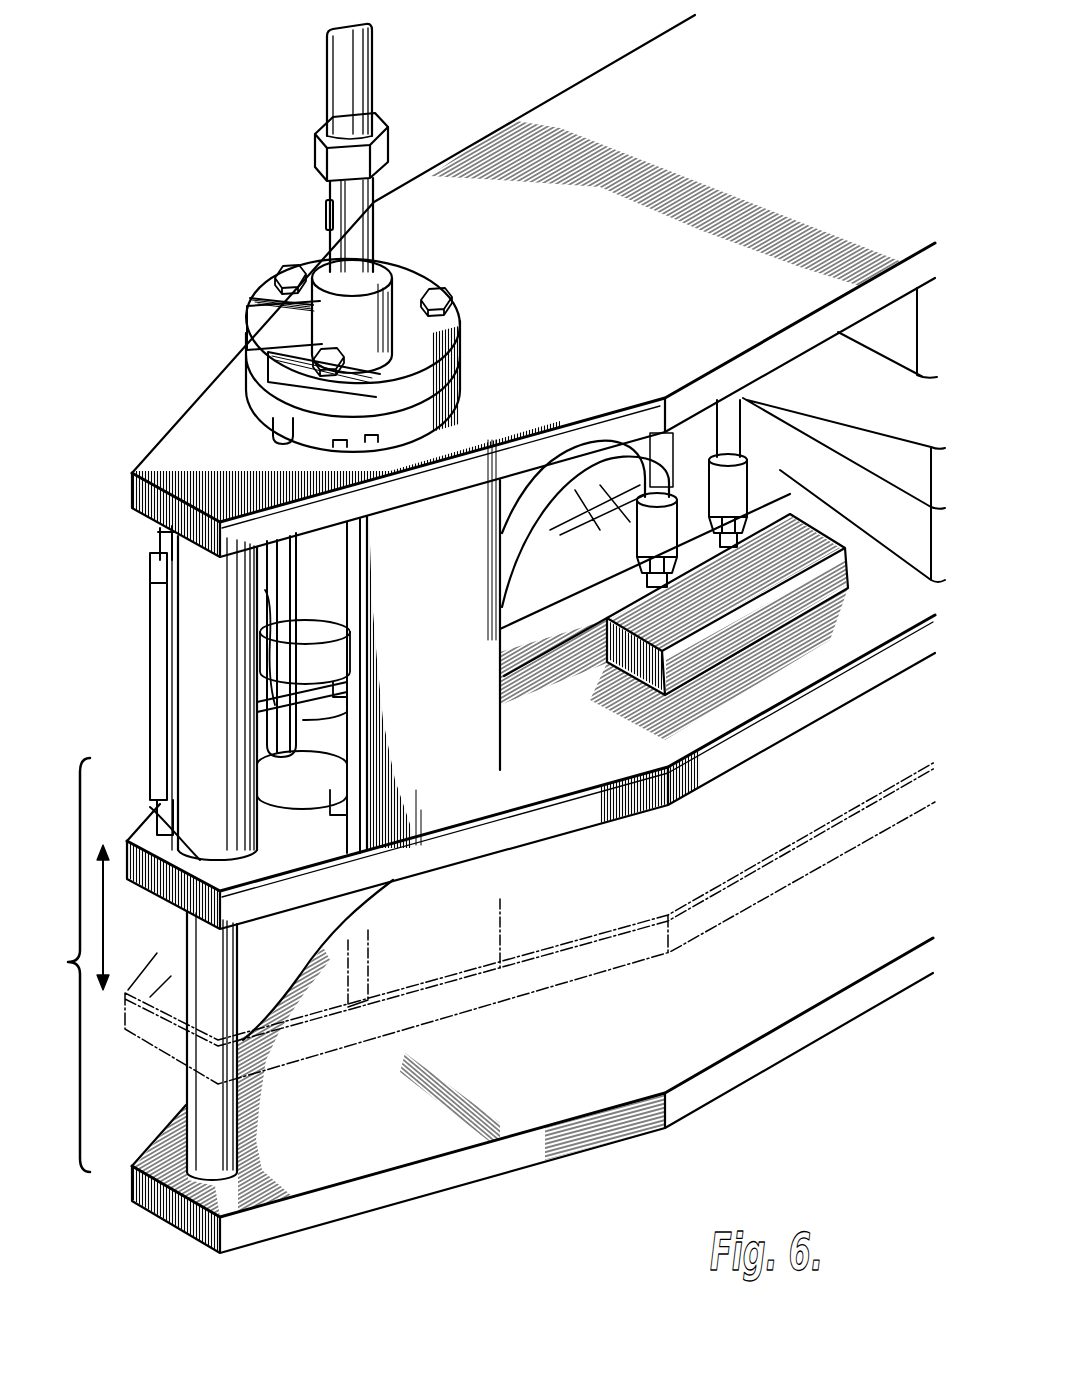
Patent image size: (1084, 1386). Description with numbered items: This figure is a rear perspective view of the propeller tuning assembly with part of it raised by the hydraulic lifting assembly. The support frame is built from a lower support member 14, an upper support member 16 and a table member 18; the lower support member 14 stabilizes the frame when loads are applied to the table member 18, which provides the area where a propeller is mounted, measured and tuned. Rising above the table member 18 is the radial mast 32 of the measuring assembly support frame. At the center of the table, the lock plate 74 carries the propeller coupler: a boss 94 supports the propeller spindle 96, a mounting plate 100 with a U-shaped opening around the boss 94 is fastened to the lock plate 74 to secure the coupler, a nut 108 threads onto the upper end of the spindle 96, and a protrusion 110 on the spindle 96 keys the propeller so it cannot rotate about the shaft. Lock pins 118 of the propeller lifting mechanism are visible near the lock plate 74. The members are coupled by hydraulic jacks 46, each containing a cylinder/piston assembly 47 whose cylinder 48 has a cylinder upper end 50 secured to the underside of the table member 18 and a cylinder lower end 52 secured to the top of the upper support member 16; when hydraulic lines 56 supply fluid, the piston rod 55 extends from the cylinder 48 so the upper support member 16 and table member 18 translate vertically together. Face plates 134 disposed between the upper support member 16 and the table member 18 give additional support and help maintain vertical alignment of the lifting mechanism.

The lower support member 14 is at (333, 1212).
The upper support member 16 is at (690, 780).
The table member 18 is at (530, 128).
The radial mast 32 is at (333, 66).
The hydraulic jack 46 is at (141, 688).
The hydraulic cylinder/piston assembly 47 is at (72, 965).
The cylinder 48 is at (178, 675).
The cylinder upper end 50 is at (180, 540).
The cylinder lower end 52 is at (195, 862).
The piston rod 55 is at (200, 1001).
The hydraulic lines 56 is at (545, 507).
The lock plate 74 is at (258, 390).
The boss 94 is at (322, 303).
The propeller spindle 96 is at (338, 190).
The mounting plate 100 is at (278, 347).
The nut 108 is at (320, 137).
The protrusion 110 is at (326, 222).
The lock pin 118 is at (268, 430).
The face plate 134 is at (487, 712).